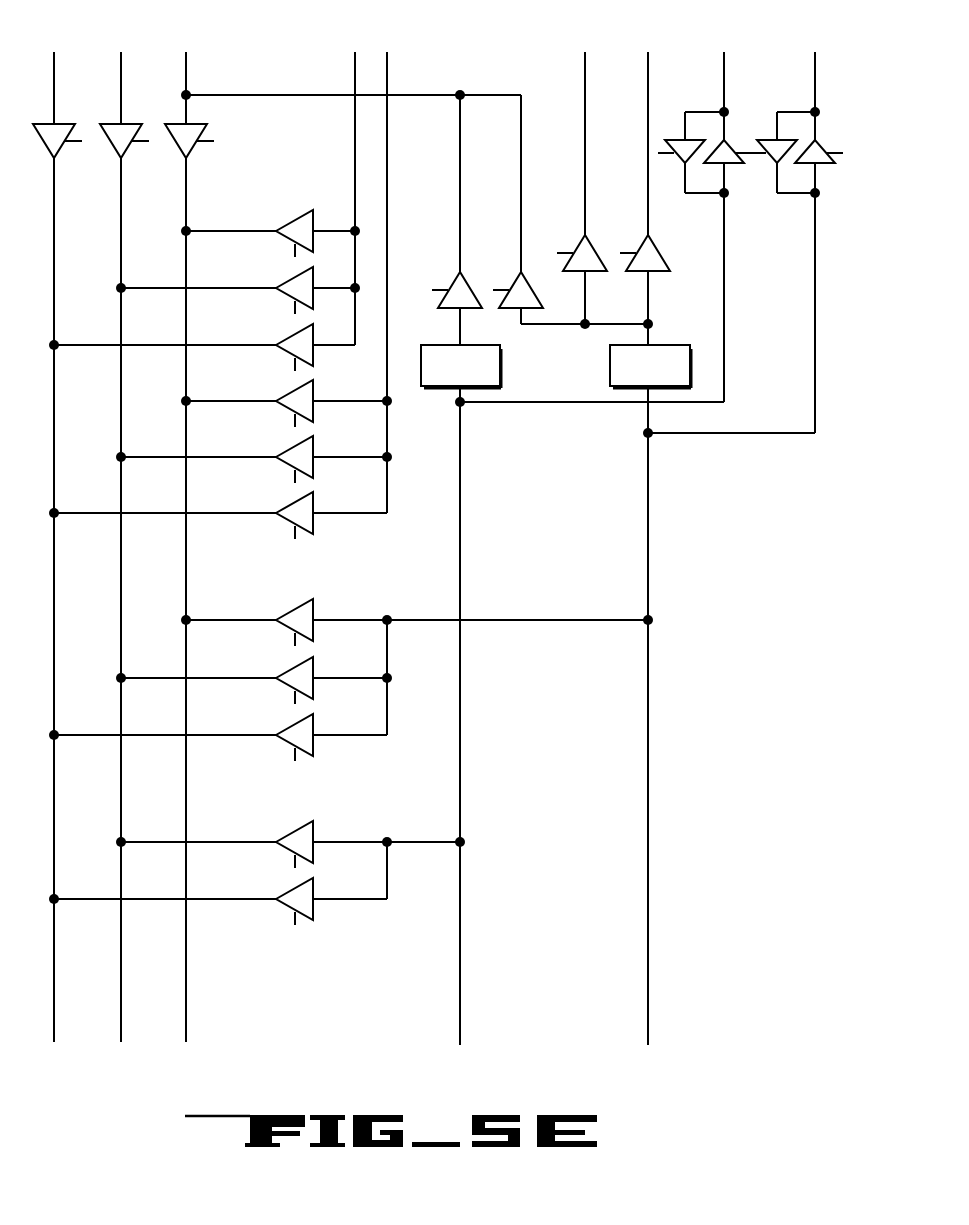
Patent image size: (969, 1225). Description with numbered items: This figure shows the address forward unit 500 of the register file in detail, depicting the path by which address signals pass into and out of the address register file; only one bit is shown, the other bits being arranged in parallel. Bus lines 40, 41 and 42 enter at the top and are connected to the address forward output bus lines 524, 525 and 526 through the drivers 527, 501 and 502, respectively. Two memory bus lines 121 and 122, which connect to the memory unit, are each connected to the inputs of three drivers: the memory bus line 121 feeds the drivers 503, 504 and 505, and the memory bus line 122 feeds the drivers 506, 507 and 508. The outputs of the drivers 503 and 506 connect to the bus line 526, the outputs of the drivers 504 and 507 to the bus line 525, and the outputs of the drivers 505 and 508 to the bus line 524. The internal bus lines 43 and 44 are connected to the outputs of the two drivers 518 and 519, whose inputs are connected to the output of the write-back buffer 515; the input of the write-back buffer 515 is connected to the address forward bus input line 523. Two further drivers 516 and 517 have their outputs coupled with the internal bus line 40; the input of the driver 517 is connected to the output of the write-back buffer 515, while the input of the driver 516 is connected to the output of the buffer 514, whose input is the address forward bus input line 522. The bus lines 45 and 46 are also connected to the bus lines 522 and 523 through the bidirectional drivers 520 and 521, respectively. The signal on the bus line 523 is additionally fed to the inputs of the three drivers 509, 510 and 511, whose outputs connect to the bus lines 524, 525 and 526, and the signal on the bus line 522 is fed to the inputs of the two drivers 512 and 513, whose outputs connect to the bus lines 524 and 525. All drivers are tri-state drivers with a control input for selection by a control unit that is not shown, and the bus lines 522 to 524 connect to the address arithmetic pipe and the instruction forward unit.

The bus line 40 is at (186, 63).
The bus line 41 is at (121, 63).
The bus line 42 is at (54, 63).
The internal bus line 43 is at (585, 70).
The internal bus line 44 is at (648, 70).
The bus line 45 is at (724, 70).
The bus line 46 is at (815, 70).
The memory bus line 121 is at (355, 70).
The memory bus line 122 is at (387, 70).
The address forward unit 500 is at (798, 500).
The driver 501 is at (114, 142).
The driver 502 is at (179, 142).
The driver 503 is at (292, 218).
The driver 504 is at (292, 275).
The driver 505 is at (287, 332).
The driver 506 is at (285, 388).
The driver 507 is at (285, 445).
The driver 508 is at (285, 501).
The driver 509 is at (280, 609).
The driver 510 is at (283, 666).
The driver 511 is at (283, 723).
The driver 512 is at (283, 830).
The driver 513 is at (283, 887).
The buffer 514 is at (500, 372).
The write-back buffer 515 is at (670, 345).
The driver 516 is at (448, 288).
The driver 517 is at (511, 288).
The driver 518 is at (575, 252).
The driver 519 is at (638, 252).
The bidirectional driver 520 is at (738, 181).
The bidirectional driver 521 is at (828, 181).
The address forward bus input line 522 is at (459, 957).
The address forward bus input line 523 is at (648, 957).
The address forward output bus line 524 is at (54, 955).
The address forward output bus line 525 is at (121, 955).
The address forward output bus line 526 is at (186, 955).
The driver 527 is at (47, 142).